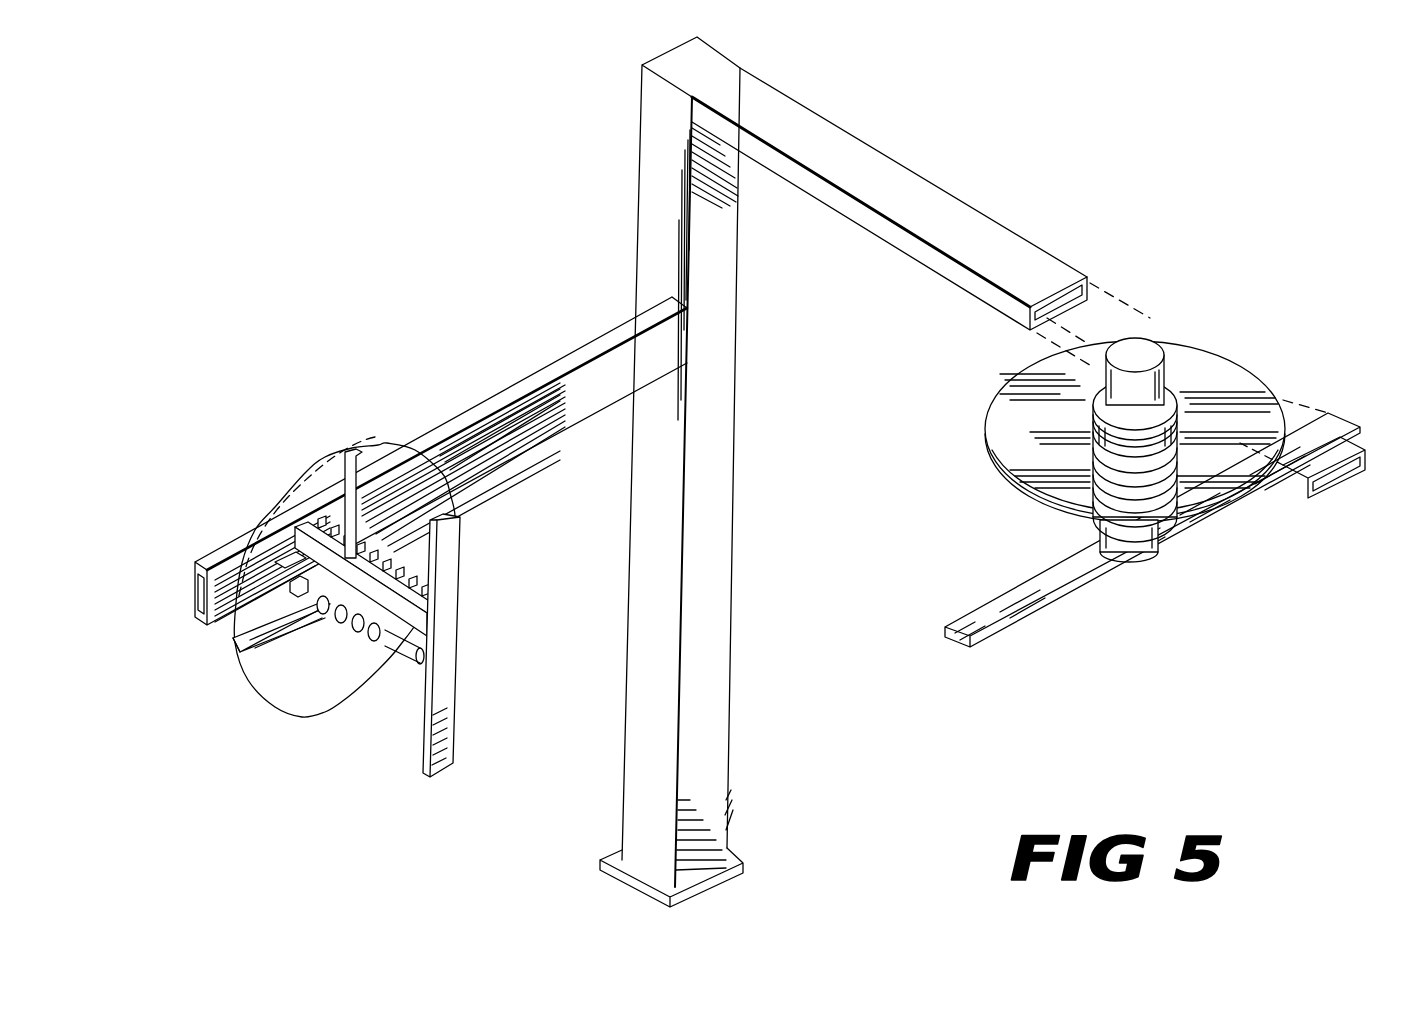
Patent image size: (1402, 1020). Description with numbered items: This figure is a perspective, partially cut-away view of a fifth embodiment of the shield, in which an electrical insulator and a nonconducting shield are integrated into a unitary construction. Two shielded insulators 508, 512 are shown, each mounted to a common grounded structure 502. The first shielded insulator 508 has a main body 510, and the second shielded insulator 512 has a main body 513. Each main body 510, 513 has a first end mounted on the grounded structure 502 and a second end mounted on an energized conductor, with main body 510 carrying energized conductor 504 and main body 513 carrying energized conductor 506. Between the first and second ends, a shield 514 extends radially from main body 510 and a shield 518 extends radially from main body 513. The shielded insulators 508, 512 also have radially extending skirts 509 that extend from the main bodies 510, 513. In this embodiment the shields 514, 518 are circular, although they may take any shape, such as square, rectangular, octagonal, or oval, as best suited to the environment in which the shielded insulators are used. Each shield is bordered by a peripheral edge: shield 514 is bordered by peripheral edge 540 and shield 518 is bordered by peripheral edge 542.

The grounded structure 502 is at (633, 137).
The energized conductor 504 is at (447, 708).
The energized conductor 506 is at (962, 622).
The shielded insulator 508 is at (312, 436).
The radially extending skirts 509 is at (336, 616).
The main body 510 is at (365, 672).
The shielded insulator 512 is at (1167, 283).
The main body 513 is at (1180, 390).
The shield 514 is at (392, 462).
The shield 518 is at (996, 432).
The peripheral edge 540 is at (234, 648).
The peripheral edge 542 is at (1018, 490).